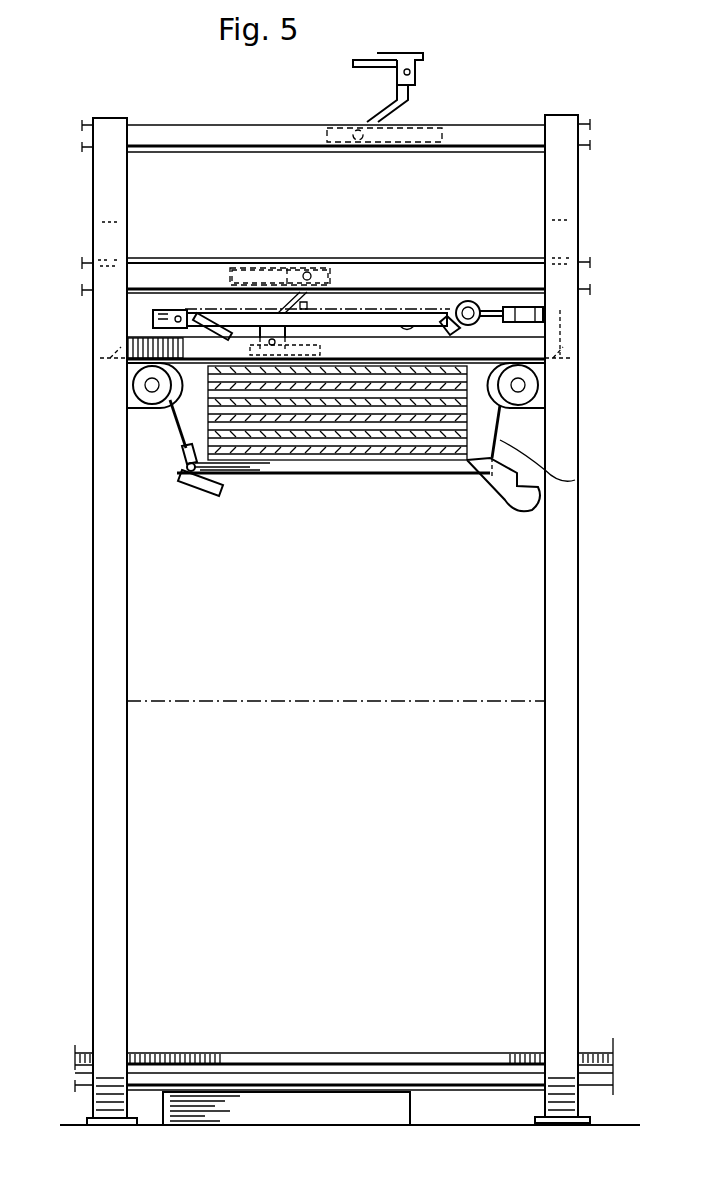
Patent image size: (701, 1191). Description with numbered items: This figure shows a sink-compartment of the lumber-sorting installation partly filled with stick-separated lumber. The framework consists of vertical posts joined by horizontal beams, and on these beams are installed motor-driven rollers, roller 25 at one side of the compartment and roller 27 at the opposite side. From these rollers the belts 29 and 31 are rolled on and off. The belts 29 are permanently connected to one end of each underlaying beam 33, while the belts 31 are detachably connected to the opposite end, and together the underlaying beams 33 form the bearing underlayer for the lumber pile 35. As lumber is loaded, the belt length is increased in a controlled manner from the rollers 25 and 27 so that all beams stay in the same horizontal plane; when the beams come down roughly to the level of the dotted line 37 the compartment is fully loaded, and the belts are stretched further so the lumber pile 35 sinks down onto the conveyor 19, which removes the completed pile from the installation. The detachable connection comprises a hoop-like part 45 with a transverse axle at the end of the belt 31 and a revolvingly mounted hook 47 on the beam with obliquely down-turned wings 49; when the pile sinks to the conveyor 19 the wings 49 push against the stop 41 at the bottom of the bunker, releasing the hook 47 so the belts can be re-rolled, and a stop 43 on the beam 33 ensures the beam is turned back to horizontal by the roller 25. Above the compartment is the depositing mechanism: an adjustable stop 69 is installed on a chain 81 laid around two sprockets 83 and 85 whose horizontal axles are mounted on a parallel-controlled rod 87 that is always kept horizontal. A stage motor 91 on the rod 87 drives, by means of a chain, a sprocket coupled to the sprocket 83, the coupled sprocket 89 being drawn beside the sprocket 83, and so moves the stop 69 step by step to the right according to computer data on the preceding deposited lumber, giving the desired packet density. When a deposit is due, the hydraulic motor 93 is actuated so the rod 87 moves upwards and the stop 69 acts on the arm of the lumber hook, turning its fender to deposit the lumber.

The conveyor 19 is at (222, 1062).
The motor-driven roller 25 is at (543, 365).
The motor-driven roller 27 is at (133, 378).
The belt 29 is at (497, 440).
The belt 31 is at (162, 420).
The underlaying beam 33 is at (280, 468).
The lumber pile 35 is at (343, 447).
The dotted line 37 is at (305, 701).
The stop 41 is at (250, 1092).
The stop 43 is at (507, 488).
The hoop-like part 45 is at (182, 450).
The hook 47 is at (182, 466).
The wings 49 is at (214, 490).
The adjustable stop 69 is at (322, 290).
The chain 81 is at (380, 300).
The sprocket 83 is at (420, 300).
The sprocket 85 is at (178, 310).
The rod 87 is at (232, 318).
The eye ring 89 is at (458, 298).
The stage motor 91 is at (487, 300).
The hydraulic motor 93 is at (524, 303).